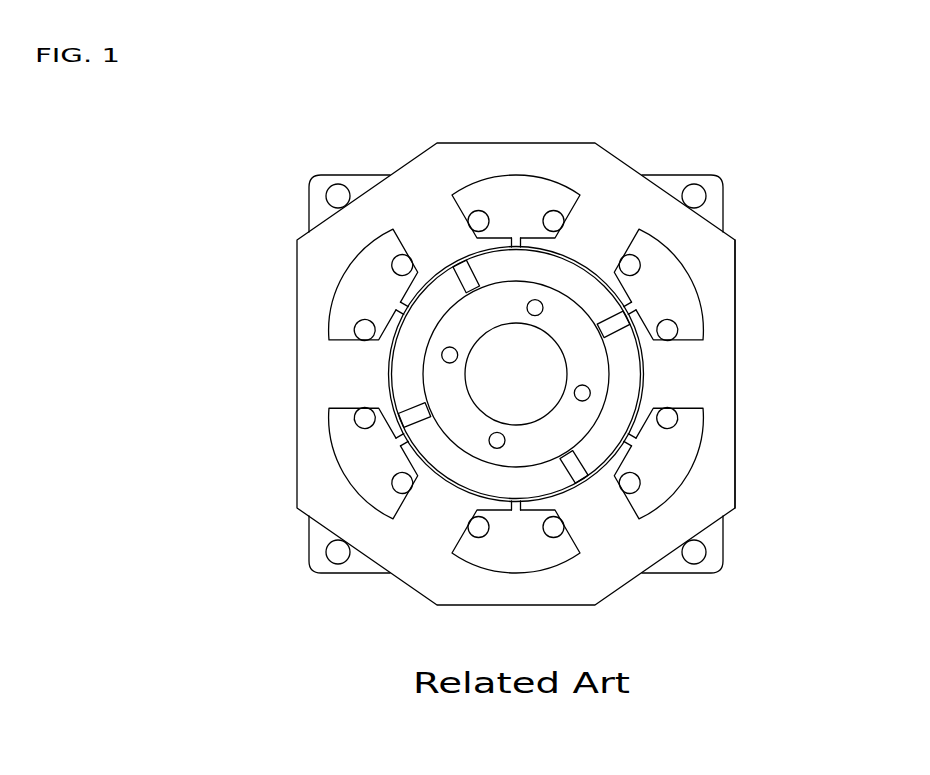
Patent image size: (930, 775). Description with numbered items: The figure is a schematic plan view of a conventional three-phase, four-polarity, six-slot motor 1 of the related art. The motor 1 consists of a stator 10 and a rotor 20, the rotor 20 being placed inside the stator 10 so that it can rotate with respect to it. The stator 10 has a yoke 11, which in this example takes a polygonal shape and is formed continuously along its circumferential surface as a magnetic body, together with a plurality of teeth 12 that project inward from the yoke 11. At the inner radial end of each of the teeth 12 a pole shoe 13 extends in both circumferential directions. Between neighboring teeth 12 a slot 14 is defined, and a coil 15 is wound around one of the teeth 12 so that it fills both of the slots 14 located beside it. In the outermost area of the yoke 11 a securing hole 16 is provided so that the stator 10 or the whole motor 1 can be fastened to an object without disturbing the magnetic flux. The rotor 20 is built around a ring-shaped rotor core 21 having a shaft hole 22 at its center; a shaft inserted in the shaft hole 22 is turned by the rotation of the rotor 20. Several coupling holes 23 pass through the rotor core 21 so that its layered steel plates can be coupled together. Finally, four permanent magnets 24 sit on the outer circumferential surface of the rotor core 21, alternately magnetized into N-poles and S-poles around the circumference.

The motor 1 is at (690, 152).
The stator 10 is at (549, 374).
The yoke 11 is at (725, 315).
The teeth 12 is at (547, 416).
The pole shoe 13 is at (637, 430).
The slot 14 is at (668, 483).
The coil 15 is at (553, 522).
The securing hole 16 is at (706, 555).
The rotor 20 is at (526, 458).
The rotor core 21 is at (430, 410).
The shaft hole 22 is at (487, 407).
The coupling holes 23 is at (442, 355).
The permanent magnet 24 is at (403, 392).